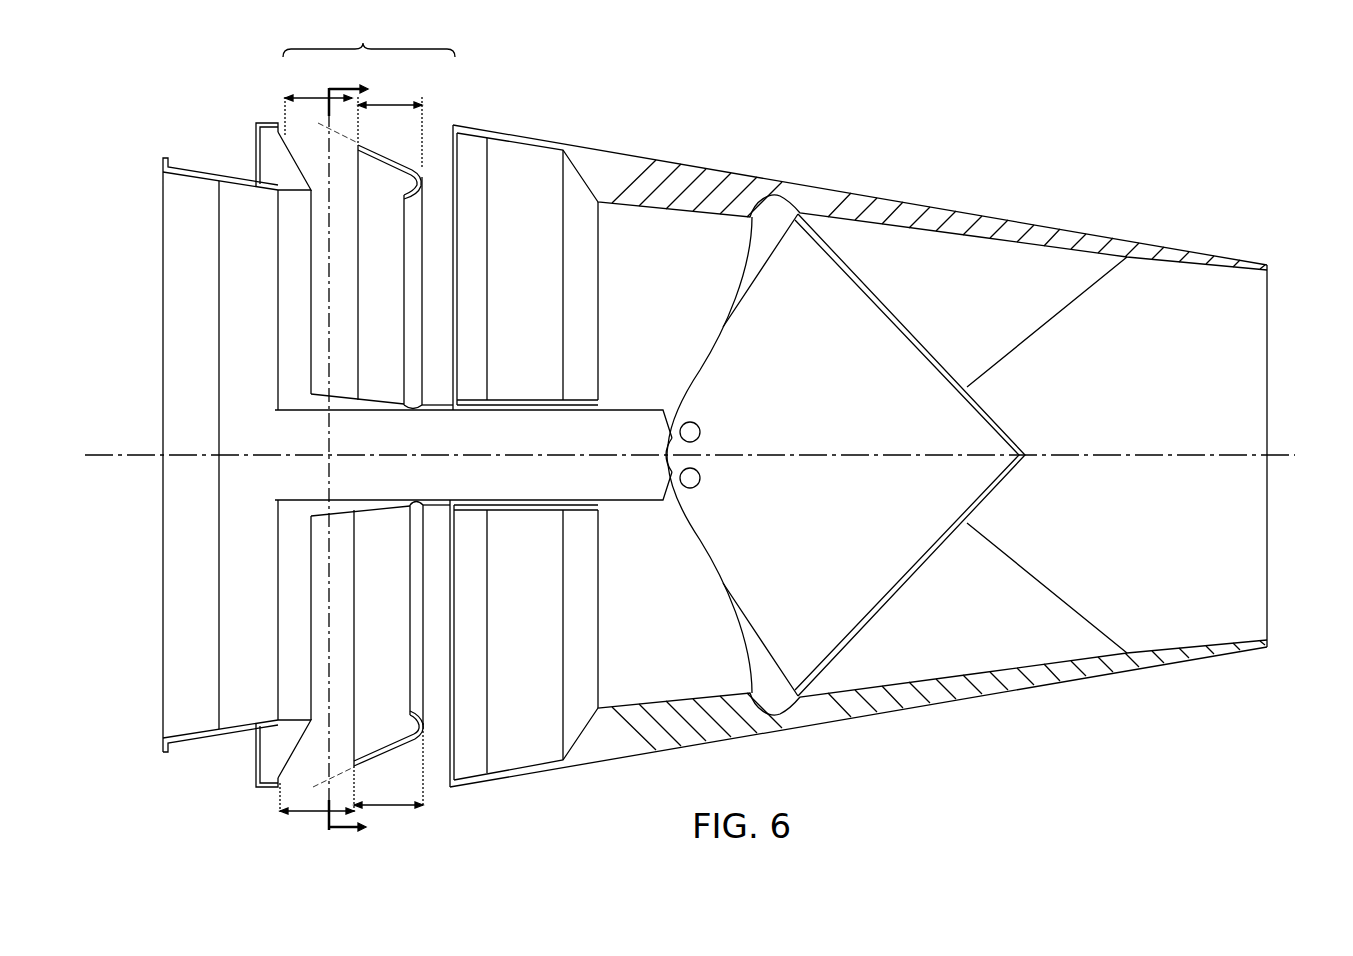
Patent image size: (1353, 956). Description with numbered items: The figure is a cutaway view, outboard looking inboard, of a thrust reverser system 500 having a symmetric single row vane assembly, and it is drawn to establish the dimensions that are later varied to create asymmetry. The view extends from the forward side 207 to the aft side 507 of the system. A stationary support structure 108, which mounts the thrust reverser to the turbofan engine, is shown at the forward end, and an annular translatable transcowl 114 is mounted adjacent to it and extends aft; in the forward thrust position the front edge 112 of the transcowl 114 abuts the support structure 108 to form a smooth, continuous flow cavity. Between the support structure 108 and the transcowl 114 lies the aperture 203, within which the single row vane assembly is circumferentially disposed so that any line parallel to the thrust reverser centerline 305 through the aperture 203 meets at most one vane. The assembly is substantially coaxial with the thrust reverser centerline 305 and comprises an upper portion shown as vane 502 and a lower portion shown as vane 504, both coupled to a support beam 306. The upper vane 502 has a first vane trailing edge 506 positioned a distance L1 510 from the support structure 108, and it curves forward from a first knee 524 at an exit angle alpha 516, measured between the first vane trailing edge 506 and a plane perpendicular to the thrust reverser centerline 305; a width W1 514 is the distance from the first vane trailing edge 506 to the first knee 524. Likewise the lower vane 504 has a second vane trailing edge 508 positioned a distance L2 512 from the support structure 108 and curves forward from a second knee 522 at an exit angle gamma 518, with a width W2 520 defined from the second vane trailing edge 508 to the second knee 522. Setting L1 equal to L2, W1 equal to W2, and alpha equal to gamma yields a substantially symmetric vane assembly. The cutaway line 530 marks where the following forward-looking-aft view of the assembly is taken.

The thrust reverser system 500 is at (827, 149).
The aperture 203 is at (369, 37).
The distance L1 510 is at (318, 99).
The cutaway line 530 is at (361, 445).
The width W1 514 is at (401, 117).
The front edge 112 is at (452, 124).
The exit angle alpha 516 is at (417, 143).
The support structure 108 is at (256, 150).
The first knee 524 is at (422, 181).
The forward side 207 is at (162, 222).
The first vane trailing edge 506 is at (356, 208).
The vane 502 is at (452, 260).
The transcowl 114 is at (994, 219).
The aft side 507 is at (1268, 365).
The thrust reverser centerline 305 is at (135, 455).
The support beam 306 is at (398, 446).
The vane 504 is at (451, 652).
The second vane trailing edge 508 is at (356, 664).
The second knee 522 is at (426, 729).
The exit angle gamma 518 is at (406, 750).
The distance L2 512 is at (312, 809).
The width W2 520 is at (400, 806).